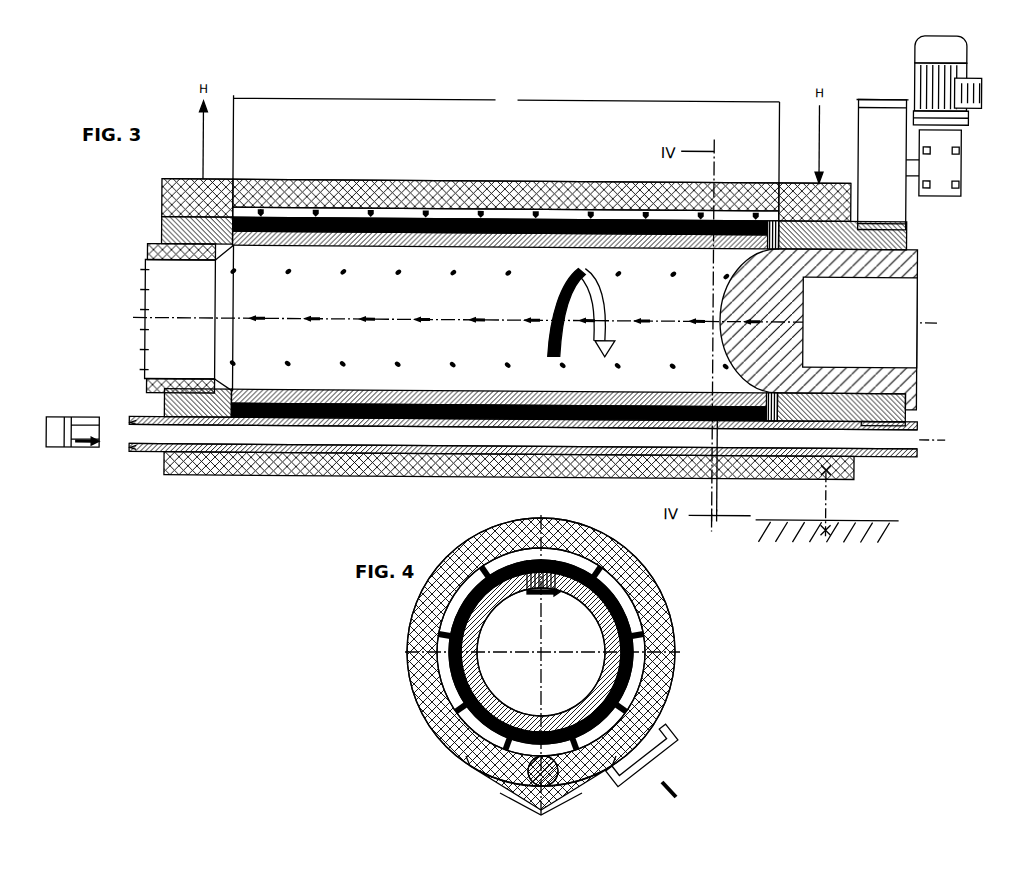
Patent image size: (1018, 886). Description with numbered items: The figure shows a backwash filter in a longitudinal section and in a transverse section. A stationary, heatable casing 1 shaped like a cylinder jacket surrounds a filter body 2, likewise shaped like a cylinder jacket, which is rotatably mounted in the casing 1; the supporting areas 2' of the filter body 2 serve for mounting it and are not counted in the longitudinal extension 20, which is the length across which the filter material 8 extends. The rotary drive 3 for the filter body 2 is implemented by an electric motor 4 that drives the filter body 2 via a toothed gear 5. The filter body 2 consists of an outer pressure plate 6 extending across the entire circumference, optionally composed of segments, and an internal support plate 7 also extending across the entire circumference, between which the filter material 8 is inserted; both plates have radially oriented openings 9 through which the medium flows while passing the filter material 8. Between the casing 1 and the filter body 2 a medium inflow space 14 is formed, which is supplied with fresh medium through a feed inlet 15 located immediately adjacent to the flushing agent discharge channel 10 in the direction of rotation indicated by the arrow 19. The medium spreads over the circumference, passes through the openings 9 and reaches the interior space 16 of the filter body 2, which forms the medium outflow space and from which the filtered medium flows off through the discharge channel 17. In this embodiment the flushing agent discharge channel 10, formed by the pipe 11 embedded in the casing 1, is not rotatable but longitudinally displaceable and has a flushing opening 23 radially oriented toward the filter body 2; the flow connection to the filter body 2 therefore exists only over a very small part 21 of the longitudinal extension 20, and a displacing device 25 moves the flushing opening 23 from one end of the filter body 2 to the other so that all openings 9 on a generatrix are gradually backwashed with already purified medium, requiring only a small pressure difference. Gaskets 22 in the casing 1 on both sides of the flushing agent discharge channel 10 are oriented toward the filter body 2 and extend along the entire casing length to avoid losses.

In FIG. 3, the casing 1 is at (723, 181).
In FIG. 4, the casing 1 is at (660, 690).
In FIG. 3, the filter body 2 is at (511, 316).
In FIG. 4, the filter body 2 is at (583, 658).
In FIG. 3, the supporting areas 2' is at (483, 172).
In FIG. 3, the rotary drive 3 is at (983, 90).
In FIG. 3, the electric motor 4 is at (938, 55).
In FIG. 3, the toothed gear 5 is at (885, 197).
In FIG. 3, the pressure plate 6 is at (660, 238).
In FIG. 4, the pressure plate 6 is at (637, 668).
In FIG. 3, the support plate 7 is at (603, 230).
In FIG. 4, the support plate 7 is at (633, 706).
In FIG. 3, the filter material 8 is at (563, 222).
In FIG. 4, the filter material 8 is at (437, 695).
In FIG. 3, the openings 9 is at (772, 237).
In FIG. 4, the openings 9 is at (597, 545).
In FIG. 3, the flushing agent discharge channel 10 is at (276, 470).
In FIG. 4, the flushing agent discharge channel 10 is at (540, 800).
In FIG. 3, the pipe 11 is at (322, 470).
In FIG. 4, the pipe 11 is at (523, 786).
In FIG. 3, the medium inflow space 14 is at (455, 210).
In FIG. 4, the medium inflow space 14 is at (437, 639).
In FIG. 4, the feed inlet 15 is at (660, 762).
In FIG. 3, the interior space 16 is at (439, 327).
In FIG. 4, the interior space 16 is at (523, 656).
In FIG. 3, the discharge channel 17 is at (168, 305).
In FIG. 3, the arrow 19 is at (612, 328).
In FIG. 4, the arrow 19 is at (540, 597).
In FIG. 3, the longitudinal extension 20 is at (506, 133).
In FIG. 3, the small part 21 is at (721, 335).
In FIG. 4, the gaskets 22 is at (583, 776).
In FIG. 3, the flushing opening 23 is at (735, 468).
In FIG. 4, the flushing opening 23 is at (555, 788).
In FIG. 3, the displacing device 25 is at (81, 457).